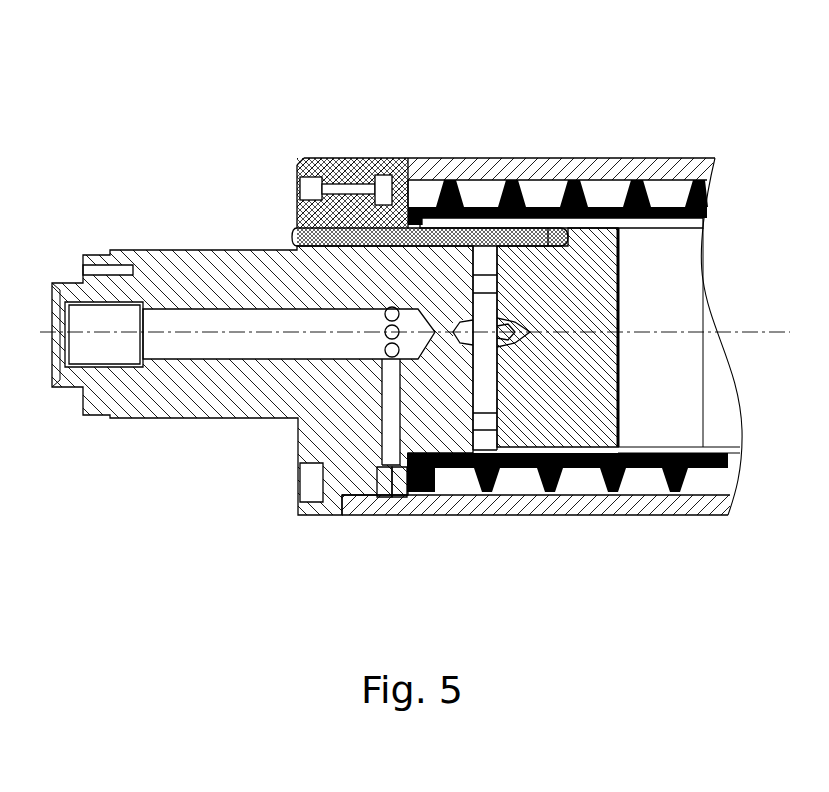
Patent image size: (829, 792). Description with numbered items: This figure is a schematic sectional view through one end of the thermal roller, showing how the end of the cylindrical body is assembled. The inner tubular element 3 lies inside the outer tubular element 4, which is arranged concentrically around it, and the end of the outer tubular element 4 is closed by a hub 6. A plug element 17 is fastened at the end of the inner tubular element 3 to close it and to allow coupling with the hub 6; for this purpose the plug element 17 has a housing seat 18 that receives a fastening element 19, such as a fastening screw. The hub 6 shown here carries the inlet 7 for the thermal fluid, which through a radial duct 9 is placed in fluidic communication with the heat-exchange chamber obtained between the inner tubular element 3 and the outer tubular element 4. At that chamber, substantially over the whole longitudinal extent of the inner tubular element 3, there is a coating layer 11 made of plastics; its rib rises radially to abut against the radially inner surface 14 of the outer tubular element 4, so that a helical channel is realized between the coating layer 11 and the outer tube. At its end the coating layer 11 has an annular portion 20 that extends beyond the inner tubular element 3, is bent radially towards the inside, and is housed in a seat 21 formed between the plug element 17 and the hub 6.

The inner tubular element 3 is at (698, 220).
The outer tubular element 4 is at (496, 168).
The hub 6 is at (228, 250).
The inlet 7 is at (172, 320).
The radial duct 9 is at (380, 428).
The coating layer 11 is at (648, 196).
The radially inner surface 14 is at (439, 186).
The plug element 17 is at (601, 242).
The housing seat 18 is at (532, 198).
The fastening element 19 is at (345, 232).
The annular portion 20 is at (405, 224).
The seat 21 is at (469, 194).